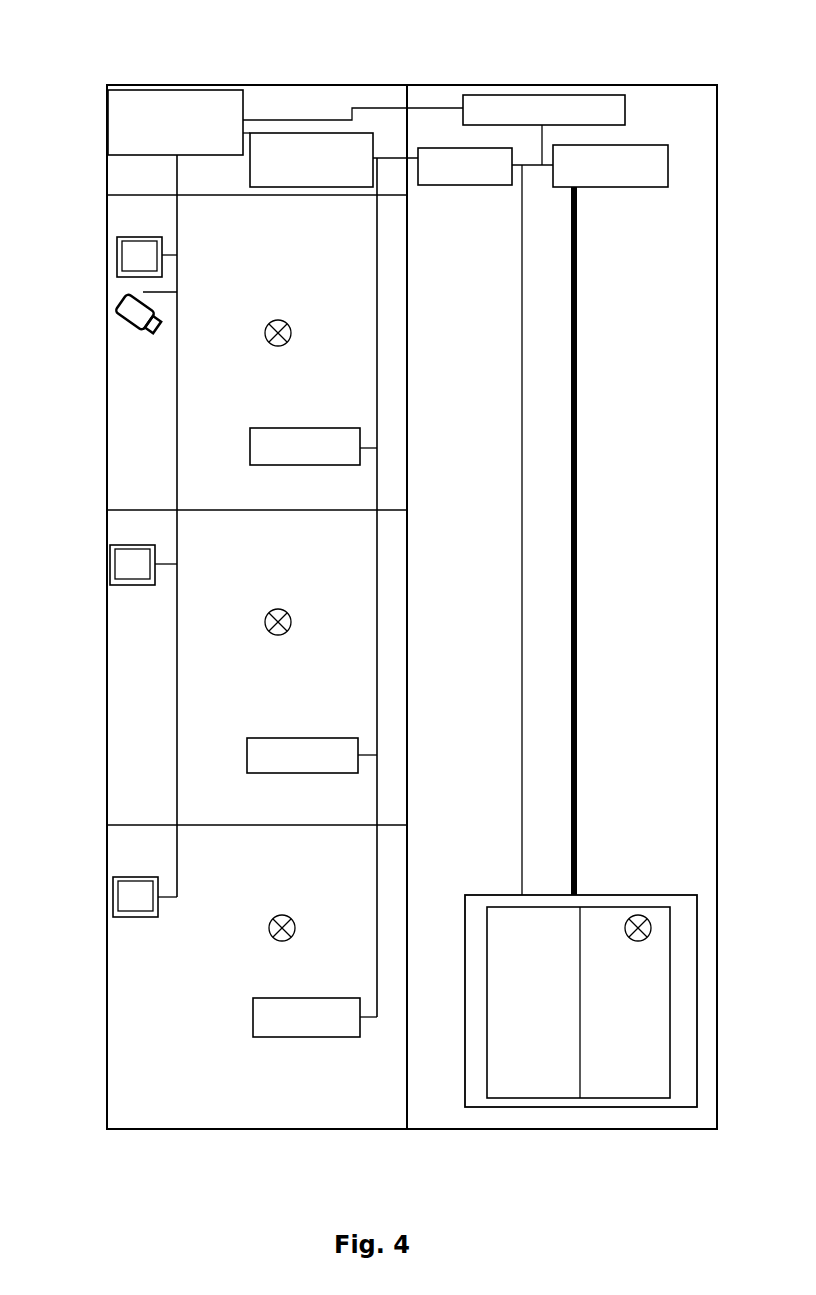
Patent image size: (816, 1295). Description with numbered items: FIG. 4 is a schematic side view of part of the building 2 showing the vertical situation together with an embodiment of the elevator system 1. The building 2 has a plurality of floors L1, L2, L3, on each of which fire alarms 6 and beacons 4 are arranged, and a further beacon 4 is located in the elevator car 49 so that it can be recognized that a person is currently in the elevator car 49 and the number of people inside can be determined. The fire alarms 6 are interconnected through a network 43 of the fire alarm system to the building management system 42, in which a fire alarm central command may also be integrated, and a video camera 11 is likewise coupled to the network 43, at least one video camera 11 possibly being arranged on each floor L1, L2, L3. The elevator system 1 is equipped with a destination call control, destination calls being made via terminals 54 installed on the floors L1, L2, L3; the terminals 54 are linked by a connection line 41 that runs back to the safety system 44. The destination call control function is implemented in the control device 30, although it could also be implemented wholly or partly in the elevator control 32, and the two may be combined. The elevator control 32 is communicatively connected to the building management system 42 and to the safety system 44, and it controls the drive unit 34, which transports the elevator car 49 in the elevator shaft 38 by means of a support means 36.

The elevator system 1 is at (337, 53).
The building 2 is at (232, 85).
The beacon 4 is at (265, 333).
The fire alarm 6 is at (118, 255).
The video camera 11 is at (118, 298).
The control device 30 is at (488, 185).
The elevator control 32 is at (612, 93).
The drive unit 34 is at (625, 188).
The support means 36 is at (578, 475).
The elevator shaft 38 is at (628, 741).
The communication line 41 is at (375, 300).
The building management system 42 is at (133, 90).
The network 43 is at (177, 443).
The safety system 44 is at (248, 166).
The elevator car 49 is at (558, 1108).
The terminal 54 is at (312, 428).
The floor L1 is at (123, 1015).
The floor L2 is at (135, 680).
The floor L3 is at (130, 358).